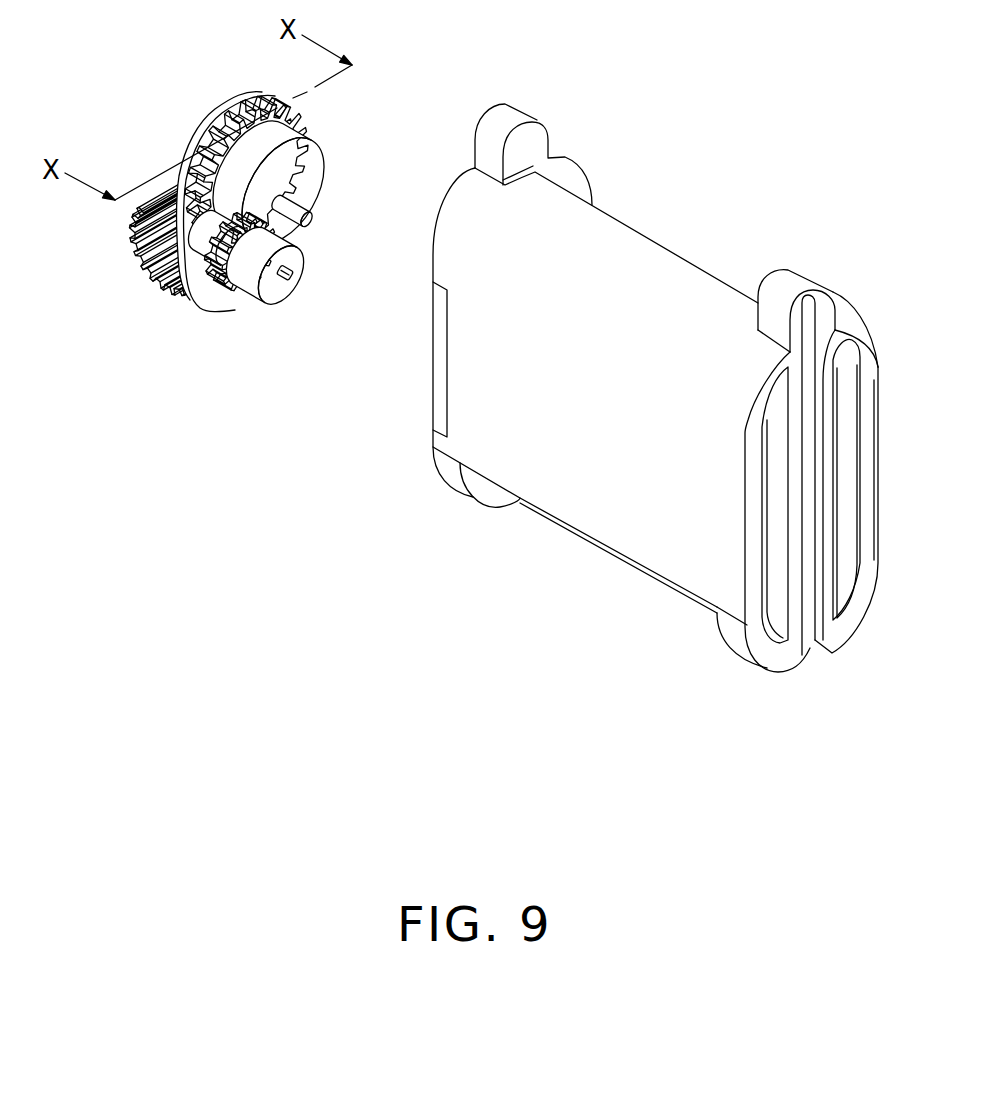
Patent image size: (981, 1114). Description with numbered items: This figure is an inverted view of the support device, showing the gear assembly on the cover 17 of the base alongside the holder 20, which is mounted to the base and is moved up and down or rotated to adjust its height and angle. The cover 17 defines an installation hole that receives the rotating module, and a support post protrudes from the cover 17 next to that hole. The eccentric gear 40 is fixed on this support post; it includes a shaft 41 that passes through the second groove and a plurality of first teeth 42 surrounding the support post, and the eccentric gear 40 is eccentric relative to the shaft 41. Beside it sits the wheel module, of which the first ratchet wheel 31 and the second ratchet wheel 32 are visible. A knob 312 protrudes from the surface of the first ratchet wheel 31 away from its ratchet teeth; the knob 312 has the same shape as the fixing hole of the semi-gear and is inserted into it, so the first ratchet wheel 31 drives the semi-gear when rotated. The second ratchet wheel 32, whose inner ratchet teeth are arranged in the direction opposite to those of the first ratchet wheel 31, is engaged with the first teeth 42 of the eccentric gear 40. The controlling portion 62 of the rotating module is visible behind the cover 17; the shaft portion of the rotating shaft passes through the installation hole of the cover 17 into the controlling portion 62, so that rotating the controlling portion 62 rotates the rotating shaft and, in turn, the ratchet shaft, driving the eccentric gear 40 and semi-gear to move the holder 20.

The cover 17 is at (216, 118).
The holder 20 is at (636, 257).
The first ratchet wheel 31 is at (303, 256).
The knob 312 is at (305, 283).
The second ratchet wheel 32 is at (234, 290).
The eccentric gear 40 is at (301, 170).
The shaft 41 is at (312, 181).
The first teeth 42 is at (305, 128).
The controlling portion 62 is at (150, 285).